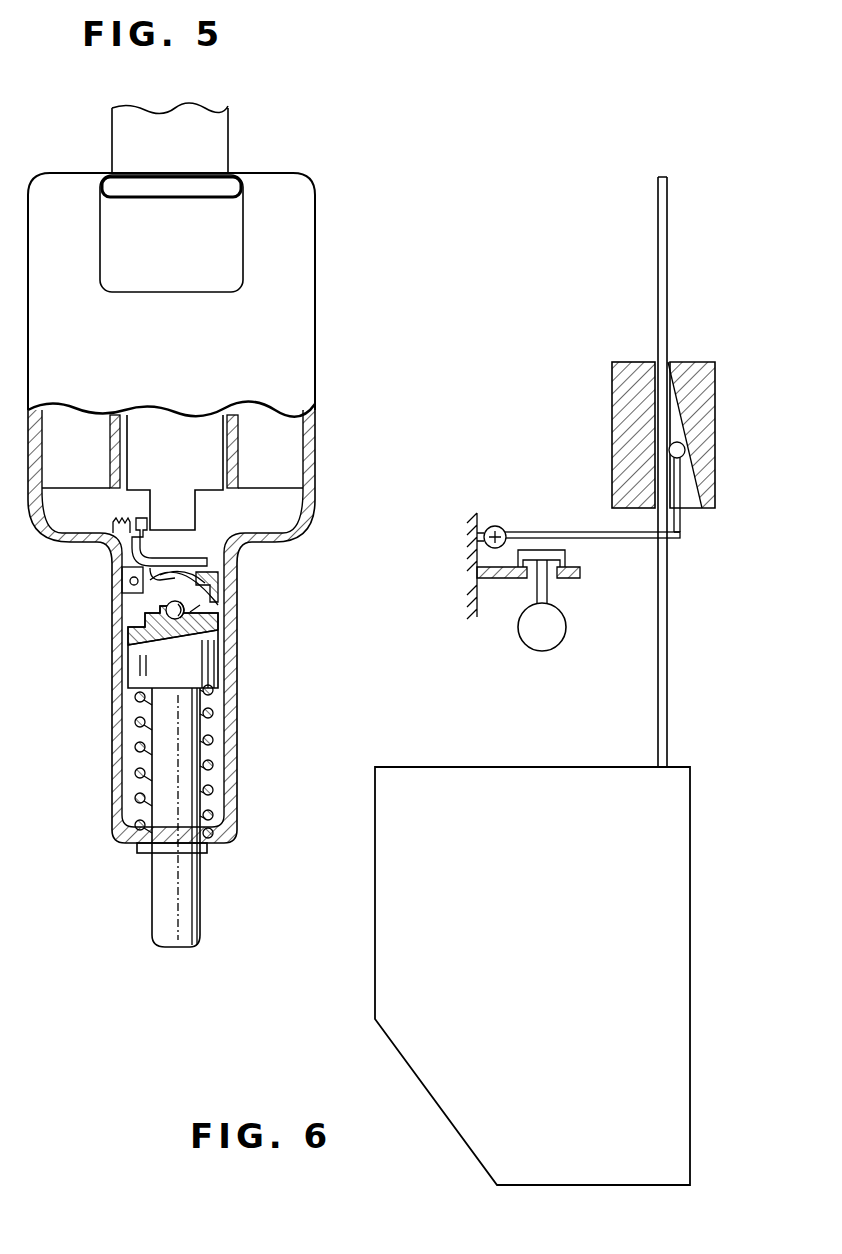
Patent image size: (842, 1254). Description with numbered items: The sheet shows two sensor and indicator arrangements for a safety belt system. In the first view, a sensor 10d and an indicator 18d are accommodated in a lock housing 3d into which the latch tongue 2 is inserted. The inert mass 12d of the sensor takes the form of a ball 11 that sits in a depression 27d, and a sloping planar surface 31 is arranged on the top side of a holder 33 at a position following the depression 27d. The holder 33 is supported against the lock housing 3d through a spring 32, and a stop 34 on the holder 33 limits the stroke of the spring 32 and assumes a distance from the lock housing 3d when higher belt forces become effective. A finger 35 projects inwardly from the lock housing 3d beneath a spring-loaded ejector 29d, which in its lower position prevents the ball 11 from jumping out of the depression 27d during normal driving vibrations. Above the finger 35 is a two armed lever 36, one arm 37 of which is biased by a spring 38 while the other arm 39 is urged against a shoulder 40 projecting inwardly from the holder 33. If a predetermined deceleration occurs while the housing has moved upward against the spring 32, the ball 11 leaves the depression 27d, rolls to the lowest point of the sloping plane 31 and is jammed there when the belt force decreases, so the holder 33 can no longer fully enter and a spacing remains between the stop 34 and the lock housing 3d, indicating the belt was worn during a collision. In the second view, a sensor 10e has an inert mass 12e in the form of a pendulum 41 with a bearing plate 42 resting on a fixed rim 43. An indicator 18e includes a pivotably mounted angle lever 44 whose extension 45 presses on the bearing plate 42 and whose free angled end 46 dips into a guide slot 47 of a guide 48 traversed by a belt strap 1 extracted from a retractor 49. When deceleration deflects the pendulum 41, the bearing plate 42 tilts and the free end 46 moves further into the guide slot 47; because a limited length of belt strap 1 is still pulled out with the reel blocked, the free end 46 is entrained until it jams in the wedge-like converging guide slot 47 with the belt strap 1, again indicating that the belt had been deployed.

In FIG. 5, the latch tongue 2 is at (218, 148).
In FIG. 5, the lock housing 3d is at (295, 238).
In FIG. 5, the indicator 18d is at (237, 860).
In FIG. 5, the ejector 29d is at (207, 463).
In FIG. 5, the spring 38 is at (118, 521).
In FIG. 5, the arm 37 is at (139, 517).
In FIG. 5, the two armed lever 36 is at (160, 548).
In FIG. 5, the arm 39 is at (200, 563).
In FIG. 5, the shoulder 40 is at (213, 580).
In FIG. 5, the sloping planar surface 31 is at (125, 630).
In FIG. 5, the sensor 10d is at (140, 640).
In FIG. 5, the finger 35 is at (192, 606).
In FIG. 5, the inert mass 12d is at (200, 612).
In FIG. 5, the ball 11 is at (167, 630).
In FIG. 5, the depression 27d is at (215, 667).
In FIG. 5, the holder 33 is at (183, 808).
In FIG. 5, the spring 32 is at (135, 748).
In FIG. 5, the stop 34 is at (140, 847).
In FIG. 6, the belt strap 1 is at (660, 286).
In FIG. 6, the guide 48 is at (705, 367).
In FIG. 6, the indicator 18e is at (630, 353).
In FIG. 6, the free angled end 46 is at (683, 477).
In FIG. 6, the guide slot 47 is at (688, 500).
In FIG. 6, the angle lever 44 is at (587, 530).
In FIG. 6, the extension 45 is at (538, 550).
In FIG. 6, the bearing plate 42 is at (565, 552).
In FIG. 6, the fixed rim 43 is at (560, 577).
In FIG. 6, the pendulum 41 is at (560, 643).
In FIG. 6, the sensor 10e is at (508, 600).
In FIG. 6, the inert mass 12e is at (537, 655).
In FIG. 6, the retractor 49 is at (690, 945).